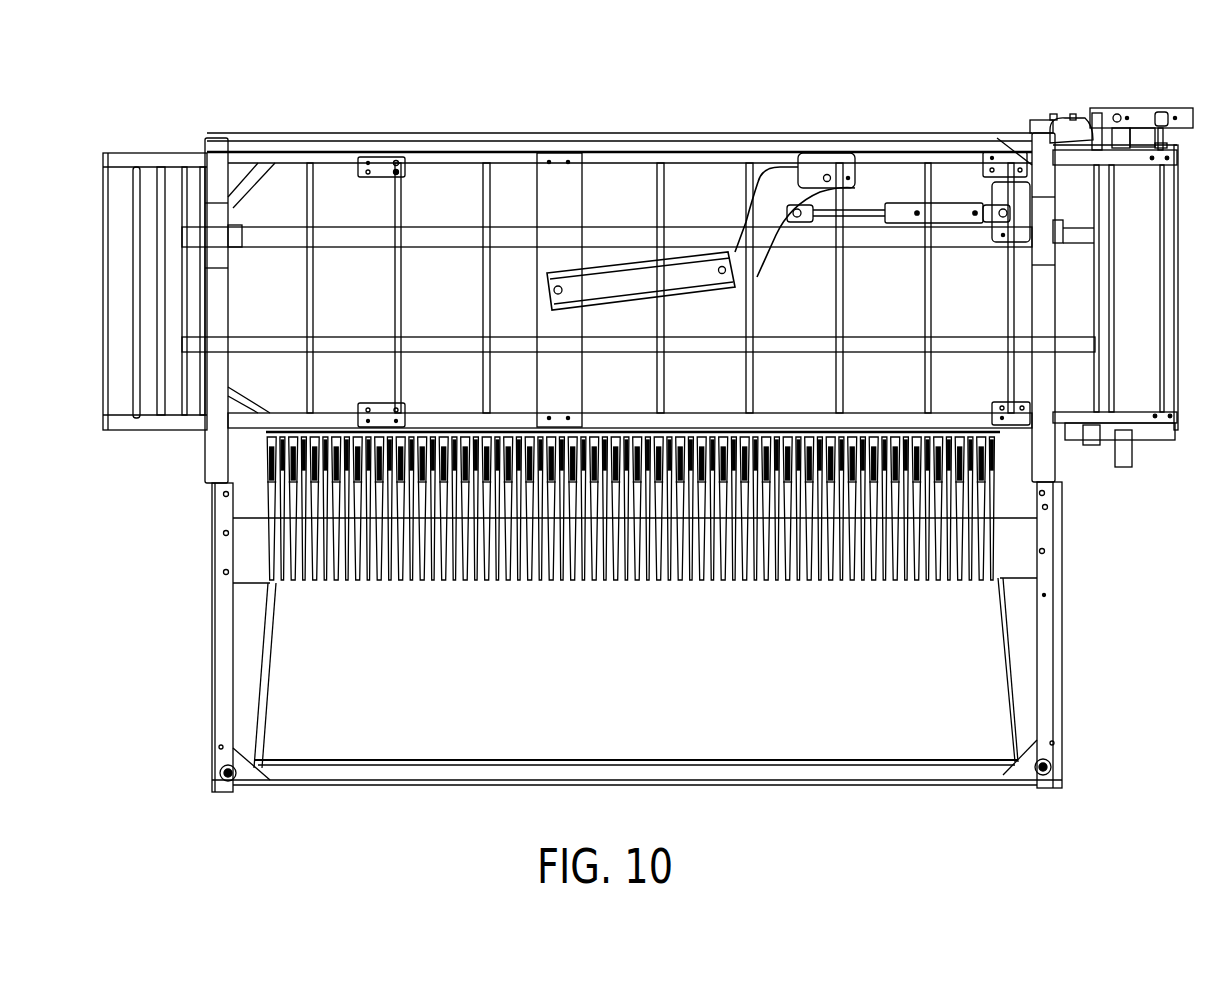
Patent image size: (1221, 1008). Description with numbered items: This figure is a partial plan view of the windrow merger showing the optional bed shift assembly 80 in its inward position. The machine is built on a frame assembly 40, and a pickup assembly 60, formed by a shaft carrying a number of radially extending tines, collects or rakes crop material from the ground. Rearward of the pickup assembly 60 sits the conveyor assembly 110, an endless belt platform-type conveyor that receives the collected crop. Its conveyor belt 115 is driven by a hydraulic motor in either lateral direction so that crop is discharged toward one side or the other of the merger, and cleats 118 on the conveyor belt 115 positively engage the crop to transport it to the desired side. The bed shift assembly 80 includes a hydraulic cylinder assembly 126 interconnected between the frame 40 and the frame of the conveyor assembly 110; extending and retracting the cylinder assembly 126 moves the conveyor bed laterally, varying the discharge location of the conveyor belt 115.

The frame assembly 40 is at (818, 142).
The pickup assembly 60 is at (721, 608).
The bed shift assembly 80 is at (875, 195).
The conveyor assembly 110 is at (1085, 88).
The conveyor belt 115 is at (459, 304).
The cleats 118 is at (490, 198).
The hydraulic cylinder assembly 126 is at (950, 213).